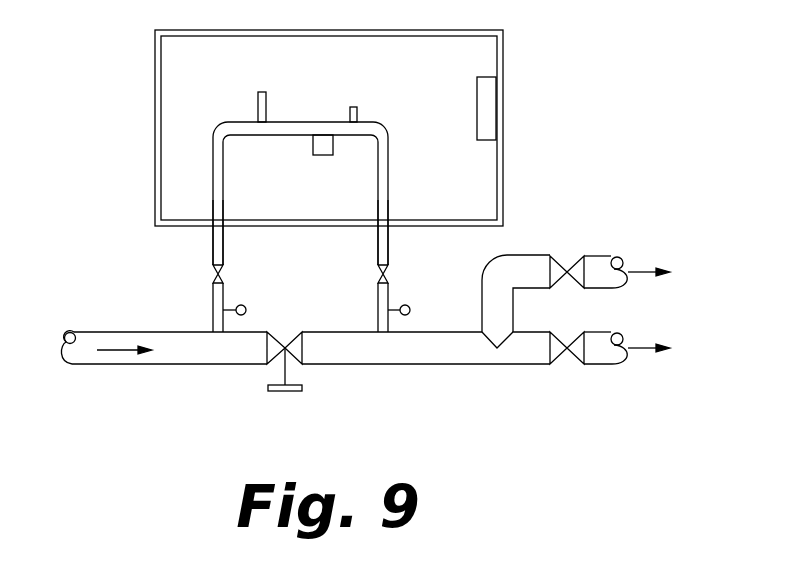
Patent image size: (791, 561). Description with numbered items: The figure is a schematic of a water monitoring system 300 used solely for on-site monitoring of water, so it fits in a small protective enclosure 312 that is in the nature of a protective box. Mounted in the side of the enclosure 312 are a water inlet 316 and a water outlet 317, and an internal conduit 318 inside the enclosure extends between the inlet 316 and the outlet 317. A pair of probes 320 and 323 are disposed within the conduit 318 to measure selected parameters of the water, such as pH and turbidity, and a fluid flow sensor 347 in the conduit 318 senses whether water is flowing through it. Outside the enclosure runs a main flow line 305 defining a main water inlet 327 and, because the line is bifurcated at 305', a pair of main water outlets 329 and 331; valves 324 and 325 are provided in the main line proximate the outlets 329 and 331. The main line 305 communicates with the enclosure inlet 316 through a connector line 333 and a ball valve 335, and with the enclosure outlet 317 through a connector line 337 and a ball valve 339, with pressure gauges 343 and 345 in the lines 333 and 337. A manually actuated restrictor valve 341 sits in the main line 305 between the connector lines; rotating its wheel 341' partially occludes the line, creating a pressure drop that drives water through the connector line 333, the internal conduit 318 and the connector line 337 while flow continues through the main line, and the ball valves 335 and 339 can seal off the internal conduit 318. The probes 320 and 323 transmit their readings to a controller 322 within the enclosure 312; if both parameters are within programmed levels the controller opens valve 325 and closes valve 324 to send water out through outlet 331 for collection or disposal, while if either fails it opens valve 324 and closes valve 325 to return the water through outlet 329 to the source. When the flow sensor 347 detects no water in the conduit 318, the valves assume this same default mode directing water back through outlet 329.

The system 300 is at (600, 75).
The main flow line 305 is at (305, 371).
The bifurcation 305' is at (501, 336).
The enclosure 312 is at (503, 165).
The water inlet 316 is at (213, 248).
The water outlet 317 is at (388, 245).
The internal conduit 318 is at (293, 122).
The probe 320 is at (258, 109).
The controller 322 is at (487, 77).
The probe 323 is at (357, 108).
The valve 324 is at (560, 262).
The valve 325 is at (570, 362).
The main water inlet 327 is at (102, 332).
The main water outlet 329 is at (605, 268).
The main water outlet 331 is at (602, 353).
The connector line 333 is at (213, 295).
The ball valve 335 is at (215, 268).
The connector line 337 is at (388, 295).
The ball valve 339 is at (392, 272).
The restrictor valve 341 is at (297, 318).
The valve wheel 341' is at (251, 387).
The pressure gauge 343 is at (241, 305).
The pressure gauge 345 is at (410, 310).
The fluid flow sensor 347 is at (323, 155).